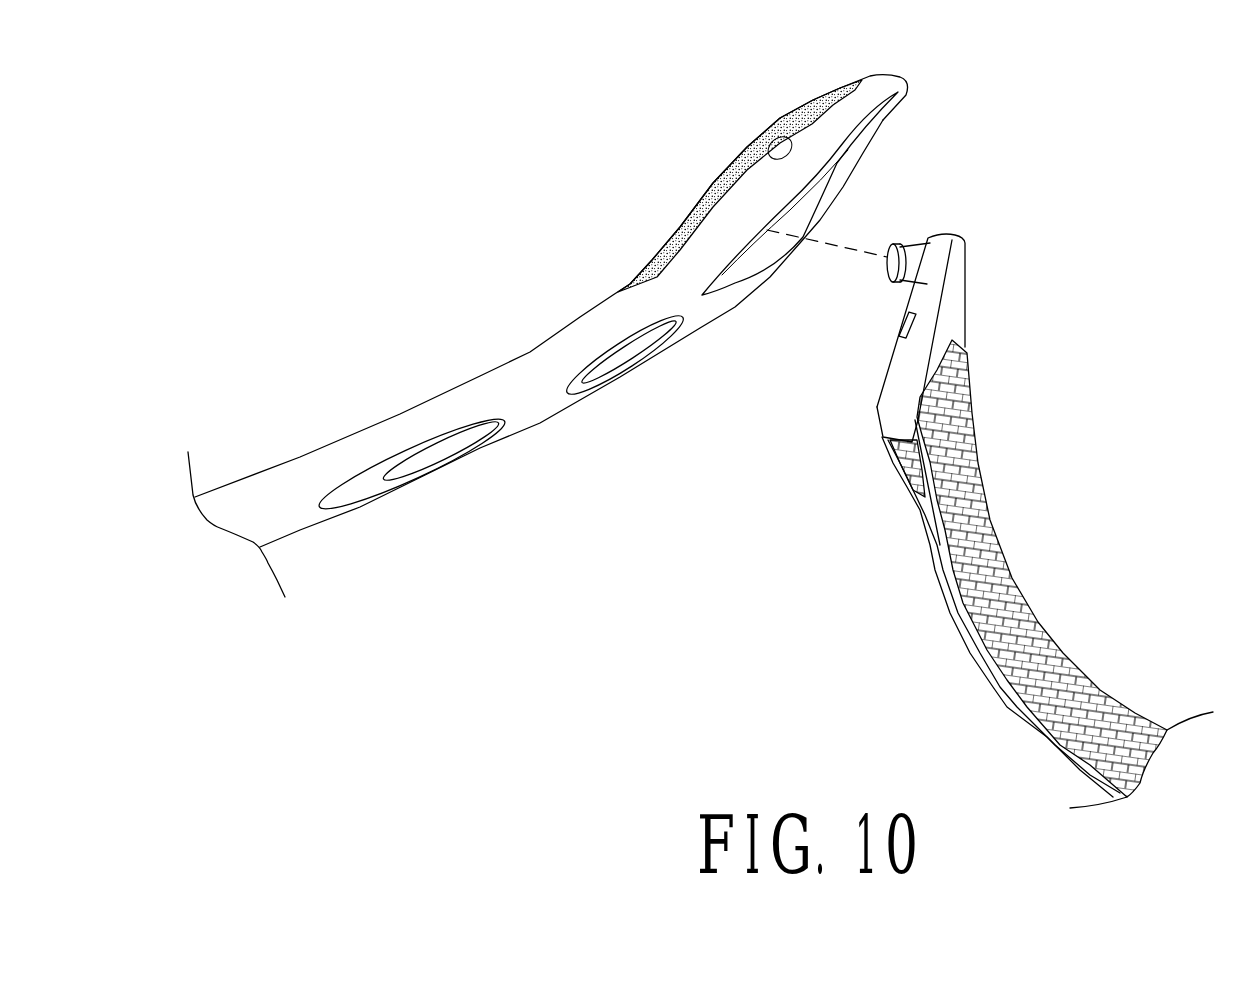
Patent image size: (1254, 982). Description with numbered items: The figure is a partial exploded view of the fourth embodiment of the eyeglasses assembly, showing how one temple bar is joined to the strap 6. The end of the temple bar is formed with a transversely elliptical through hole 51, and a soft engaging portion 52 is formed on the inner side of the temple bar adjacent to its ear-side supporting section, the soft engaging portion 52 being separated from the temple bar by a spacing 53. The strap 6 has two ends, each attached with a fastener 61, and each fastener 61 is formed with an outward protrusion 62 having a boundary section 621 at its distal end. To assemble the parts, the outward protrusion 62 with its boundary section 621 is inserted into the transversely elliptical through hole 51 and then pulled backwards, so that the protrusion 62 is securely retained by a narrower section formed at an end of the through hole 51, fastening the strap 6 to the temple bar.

The strap 6 is at (1003, 600).
The transversely elliptical through hole 51 is at (813, 197).
The soft engaging portion 52 is at (660, 248).
The spacing 53 is at (750, 150).
The fastener 61 is at (952, 300).
The outward protrusion 62 is at (839, 329).
The boundary section 621 is at (887, 273).